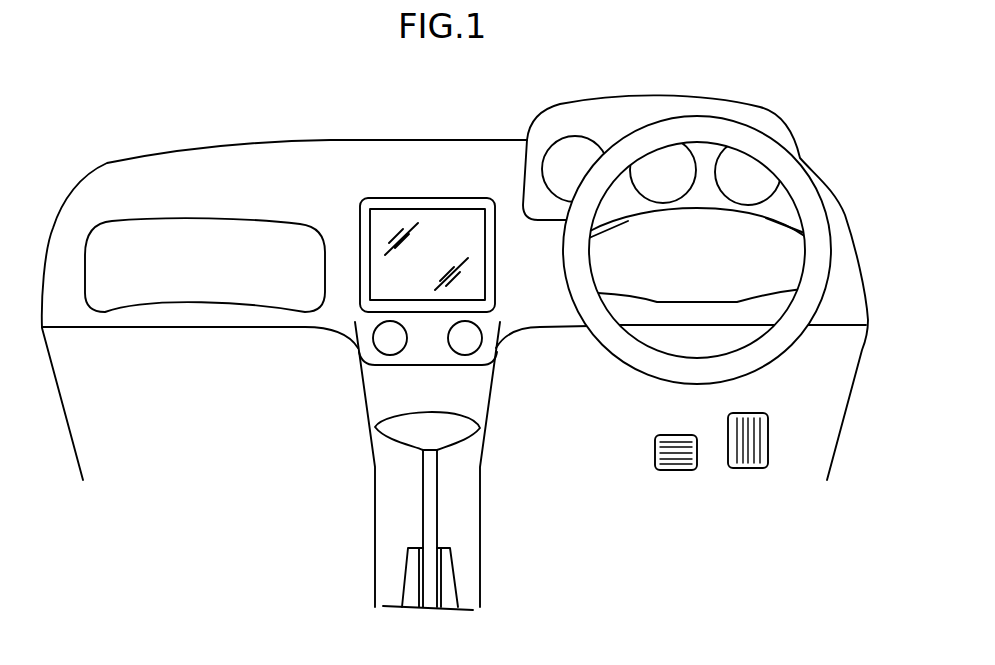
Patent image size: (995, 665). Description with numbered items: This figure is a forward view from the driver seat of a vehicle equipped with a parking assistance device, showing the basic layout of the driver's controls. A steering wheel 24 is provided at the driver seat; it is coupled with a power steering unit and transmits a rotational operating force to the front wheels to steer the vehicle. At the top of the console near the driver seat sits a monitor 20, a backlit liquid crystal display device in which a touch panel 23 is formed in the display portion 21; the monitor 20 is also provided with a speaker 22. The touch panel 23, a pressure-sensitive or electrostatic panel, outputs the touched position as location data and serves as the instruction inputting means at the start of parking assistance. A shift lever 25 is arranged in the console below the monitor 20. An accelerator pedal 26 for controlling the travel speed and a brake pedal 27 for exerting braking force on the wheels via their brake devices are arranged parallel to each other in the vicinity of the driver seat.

The monitor 20 is at (440, 187).
The display portion 21 is at (427, 255).
The speaker 22 is at (427, 254).
The touch panel 23 is at (425, 205).
The steering wheel 24 is at (810, 210).
The shift lever 25 is at (390, 428).
The accelerator pedal 26 is at (770, 442).
The brake pedal 27 is at (677, 433).